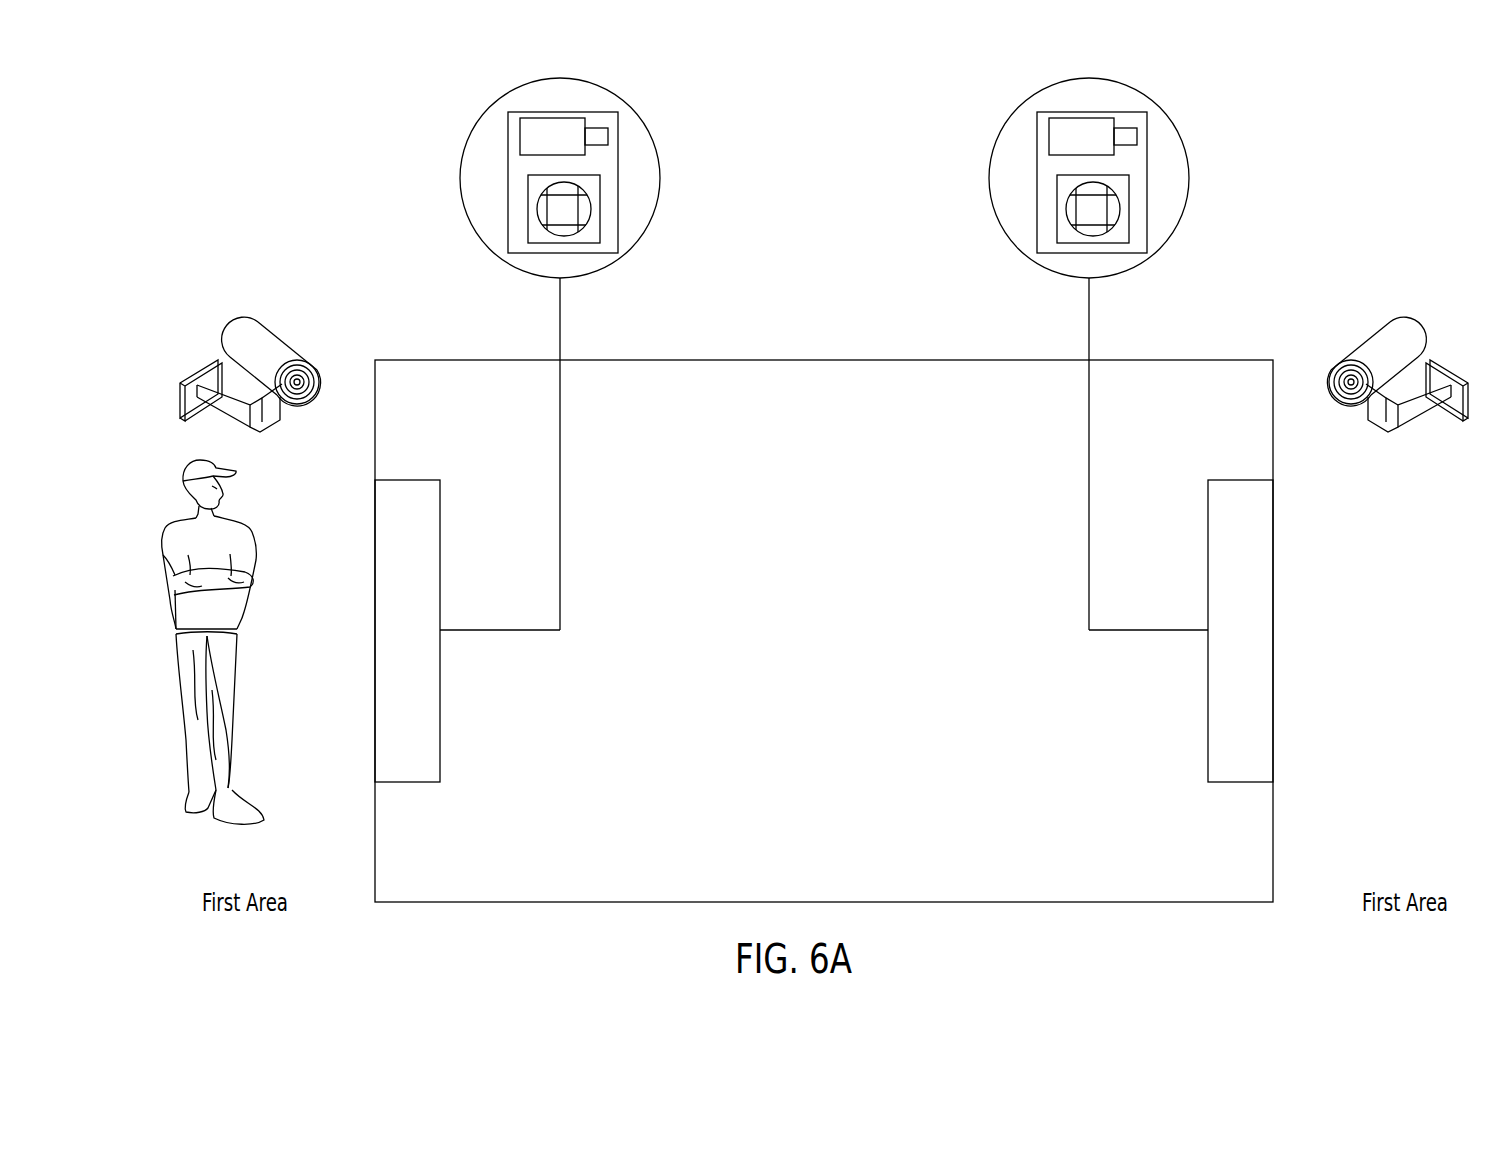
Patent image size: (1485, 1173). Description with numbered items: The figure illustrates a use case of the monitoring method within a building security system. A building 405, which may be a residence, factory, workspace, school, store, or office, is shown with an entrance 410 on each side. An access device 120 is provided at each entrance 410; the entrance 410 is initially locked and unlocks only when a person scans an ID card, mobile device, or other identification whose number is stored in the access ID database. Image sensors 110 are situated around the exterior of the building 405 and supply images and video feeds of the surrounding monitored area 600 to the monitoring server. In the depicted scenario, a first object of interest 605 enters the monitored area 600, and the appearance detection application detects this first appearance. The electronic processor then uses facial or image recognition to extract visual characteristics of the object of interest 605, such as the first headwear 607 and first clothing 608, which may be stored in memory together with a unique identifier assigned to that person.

The monitored area 600 is at (213, 146).
The image sensors 110 is at (260, 321).
The access device 120 is at (460, 180).
The building 405 is at (825, 360).
The entrance 410 is at (375, 632).
The object of interest 605 is at (219, 626).
The first headwear 607 is at (190, 462).
The first clothing 608 is at (166, 520).